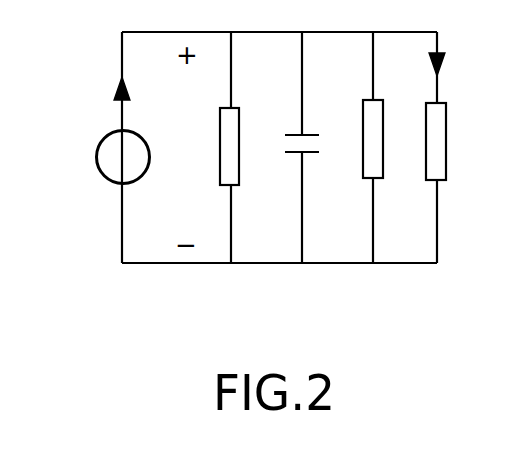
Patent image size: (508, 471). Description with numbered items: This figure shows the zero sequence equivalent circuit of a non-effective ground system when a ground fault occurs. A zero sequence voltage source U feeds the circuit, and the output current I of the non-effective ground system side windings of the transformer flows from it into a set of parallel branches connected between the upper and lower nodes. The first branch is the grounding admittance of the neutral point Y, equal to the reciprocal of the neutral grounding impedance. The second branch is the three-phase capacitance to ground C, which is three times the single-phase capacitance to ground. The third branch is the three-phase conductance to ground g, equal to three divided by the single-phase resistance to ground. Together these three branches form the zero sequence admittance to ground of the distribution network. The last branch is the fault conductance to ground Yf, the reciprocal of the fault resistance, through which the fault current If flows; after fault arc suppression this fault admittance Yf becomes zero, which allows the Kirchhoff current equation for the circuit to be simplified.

The zero sequence voltage source U is at (111, 147).
The output current I is at (129, 82).
The grounding admittance of the neutral point Y is at (243, 147).
The three-phase capacitance to ground C is at (316, 147).
The three-phase conductance to ground g is at (386, 147).
The fault conductance to ground Yf is at (450, 147).
The fault current If is at (449, 67).